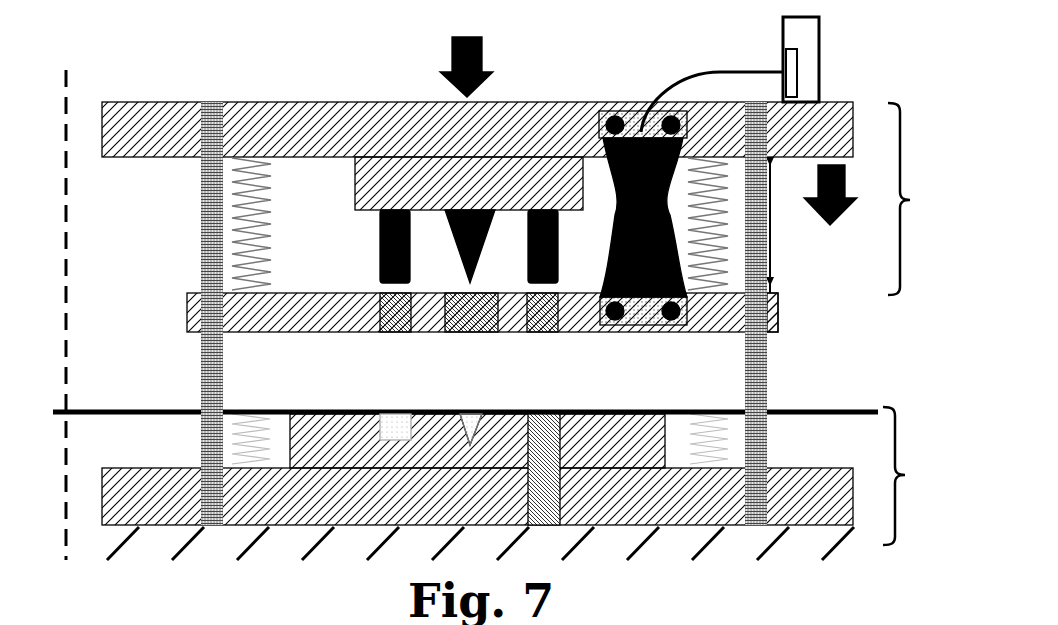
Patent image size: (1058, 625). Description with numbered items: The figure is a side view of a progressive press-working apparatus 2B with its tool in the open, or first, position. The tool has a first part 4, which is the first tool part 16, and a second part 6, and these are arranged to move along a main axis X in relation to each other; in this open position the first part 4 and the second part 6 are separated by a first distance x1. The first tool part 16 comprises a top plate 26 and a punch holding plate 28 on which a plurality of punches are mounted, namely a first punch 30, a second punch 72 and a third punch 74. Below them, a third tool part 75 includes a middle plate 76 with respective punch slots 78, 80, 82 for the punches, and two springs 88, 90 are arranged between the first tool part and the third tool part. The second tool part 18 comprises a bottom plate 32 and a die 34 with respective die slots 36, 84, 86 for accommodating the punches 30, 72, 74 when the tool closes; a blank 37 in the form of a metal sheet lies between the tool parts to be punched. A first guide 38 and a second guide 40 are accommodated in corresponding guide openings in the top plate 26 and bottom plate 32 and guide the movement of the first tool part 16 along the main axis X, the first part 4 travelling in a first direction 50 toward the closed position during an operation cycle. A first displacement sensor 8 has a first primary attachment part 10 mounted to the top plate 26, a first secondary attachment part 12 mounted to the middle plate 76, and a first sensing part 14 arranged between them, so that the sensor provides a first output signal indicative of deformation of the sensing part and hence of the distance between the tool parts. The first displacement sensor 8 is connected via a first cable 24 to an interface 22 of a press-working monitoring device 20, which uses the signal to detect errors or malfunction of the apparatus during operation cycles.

The press-working apparatus 2B is at (288, 72).
The first part 4 is at (170, 104).
The second part 6 is at (490, 328).
The first displacement sensor 8 is at (610, 275).
The first primary attachment part 10 is at (600, 118).
The first secondary attachment part 12 is at (645, 325).
The first sensing part 14 is at (615, 237).
The first tool part 16 is at (919, 199).
The second tool part 18 is at (915, 476).
The press-working monitoring device 20 is at (801, 58).
The interface 22 is at (797, 72).
The first cable 24 is at (648, 112).
The top plate 26 is at (477, 89).
The punch holding plate 28 is at (355, 195).
The first punch 30 is at (523, 247).
The bottom plate 32 is at (350, 527).
The die 34 is at (477, 417).
The first die slot 36 is at (543, 430).
The blank 37 is at (192, 412).
The first guide 38 is at (201, 218).
The second guide 40 is at (755, 270).
The first direction 50 is at (845, 185).
The second punch 72 is at (470, 249).
The third punch 74 is at (380, 244).
The third tool part 75 is at (482, 337).
The middle plate 76 is at (285, 333).
The punch slot 78 is at (536, 333).
The punch slot 80 is at (462, 333).
The punch slot 82 is at (383, 333).
The die slot 84 is at (470, 435).
The die slot 86 is at (398, 425).
The spring 88 is at (255, 258).
The spring 90 is at (707, 273).
The main axis X is at (66, 268).
The first distance x1 is at (772, 245).